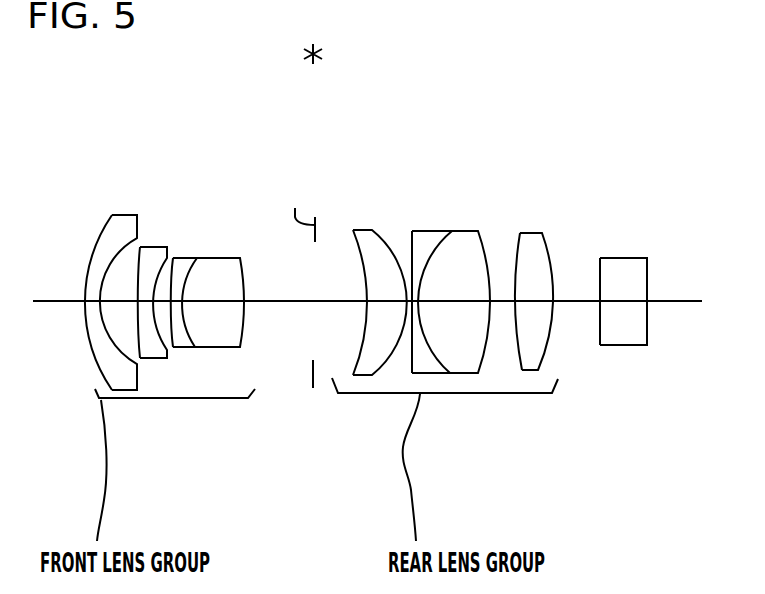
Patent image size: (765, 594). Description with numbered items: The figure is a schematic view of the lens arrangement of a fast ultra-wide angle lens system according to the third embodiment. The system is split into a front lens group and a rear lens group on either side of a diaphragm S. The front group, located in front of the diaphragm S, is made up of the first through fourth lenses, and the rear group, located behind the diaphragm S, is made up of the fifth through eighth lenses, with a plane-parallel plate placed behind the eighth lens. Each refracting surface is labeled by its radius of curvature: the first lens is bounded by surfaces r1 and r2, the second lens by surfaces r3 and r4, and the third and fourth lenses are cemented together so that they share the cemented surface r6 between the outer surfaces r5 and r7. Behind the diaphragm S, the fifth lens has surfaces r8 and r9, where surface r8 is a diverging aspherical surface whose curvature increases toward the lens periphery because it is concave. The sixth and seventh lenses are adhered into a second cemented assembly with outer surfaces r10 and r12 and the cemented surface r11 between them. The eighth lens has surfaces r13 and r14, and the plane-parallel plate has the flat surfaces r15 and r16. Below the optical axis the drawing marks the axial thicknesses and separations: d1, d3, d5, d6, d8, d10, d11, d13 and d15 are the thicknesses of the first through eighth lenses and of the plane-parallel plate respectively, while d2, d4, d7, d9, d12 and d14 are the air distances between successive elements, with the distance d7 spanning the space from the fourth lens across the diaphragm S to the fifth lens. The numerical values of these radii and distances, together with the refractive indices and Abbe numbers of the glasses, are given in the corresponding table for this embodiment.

The radius of curvature of first lens surface r1 is at (112, 215).
The radius of curvature of second lens surface r2 is at (137, 215).
The radius of curvature of third lens surface r3 is at (142, 245).
The radius of curvature of fourth lens surface r4 is at (174, 258).
The radius of curvature of fifth lens surface r5 is at (173, 258).
The radius of curvature of sixth lens surface r6 is at (197, 258).
The radius of curvature of seventh lens surface r7 is at (238, 258).
The radius of curvature of eighth lens surface r8 is at (352, 230).
The radius of curvature of ninth lens surface r9 is at (370, 228).
The radius of curvature of tenth lens surface r10 is at (412, 231).
The radius of curvature of eleventh lens surface r11 is at (453, 231).
The radius of curvature of twelfth lens surface r12 is at (478, 231).
The radius of curvature of thirteenth lens surface r13 is at (520, 233).
The radius of curvature of fourteenth lens surface r14 is at (542, 233).
The radius of curvature of fifteenth lens surface r15 is at (600, 258).
The radius of curvature of sixteenth lens surface r16 is at (648, 258).
The diaphragm S is at (301, 283).
The lens thickness d1 is at (92, 301).
The lens distance d2 is at (118, 301).
The lens thickness d3 is at (148, 301).
The lens distance d4 is at (170, 301).
The lens thickness d5 is at (182, 301).
The lens thickness d6 is at (217, 301).
The lens distance d7 is at (305, 301).
The lens thickness d8 is at (380, 301).
The lens distance d9 is at (405, 301).
The lens thickness d10 is at (415, 301).
The lens thickness d11 is at (454, 301).
The lens distance d12 is at (504, 301).
The lens thickness d13 is at (533, 301).
The lens distance d14 is at (575, 301).
The lens thickness d15 is at (623, 301).